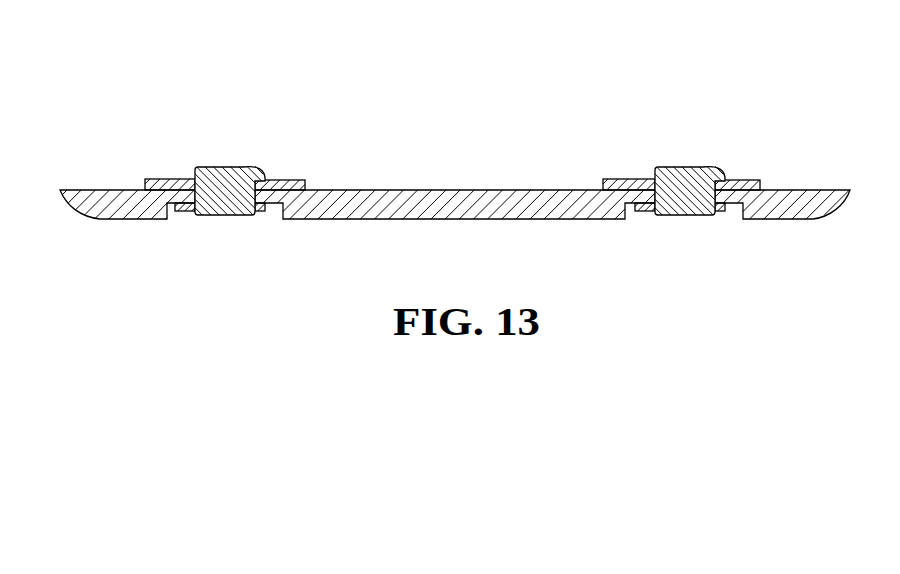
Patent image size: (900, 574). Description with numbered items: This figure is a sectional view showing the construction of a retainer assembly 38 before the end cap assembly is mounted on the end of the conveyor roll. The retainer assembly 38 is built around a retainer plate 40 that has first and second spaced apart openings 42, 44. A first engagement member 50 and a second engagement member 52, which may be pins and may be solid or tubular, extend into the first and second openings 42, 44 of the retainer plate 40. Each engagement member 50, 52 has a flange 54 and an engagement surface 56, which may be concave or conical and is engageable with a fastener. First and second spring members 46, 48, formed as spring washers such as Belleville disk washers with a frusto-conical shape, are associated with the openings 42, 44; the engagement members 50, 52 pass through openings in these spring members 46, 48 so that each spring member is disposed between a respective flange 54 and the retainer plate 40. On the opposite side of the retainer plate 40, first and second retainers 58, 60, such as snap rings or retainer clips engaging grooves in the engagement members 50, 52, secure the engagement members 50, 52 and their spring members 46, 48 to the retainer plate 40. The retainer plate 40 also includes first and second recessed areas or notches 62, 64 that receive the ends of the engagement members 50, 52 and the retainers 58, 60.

The retainer assembly 38 is at (768, 90).
The retainer plate 40 is at (133, 220).
The first opening 42 is at (241, 168).
The second opening 44 is at (697, 170).
The first spring member 46 is at (293, 178).
The second spring member 48 is at (750, 178).
The first engagement member 50 is at (217, 216).
The second engagement member 52 is at (678, 218).
The flange 54 is at (183, 174).
The engagement surface 56 is at (215, 162).
The first retainer 58 is at (258, 214).
The second retainer 60 is at (718, 216).
The first notch 62 is at (274, 220).
The second notch 64 is at (737, 218).